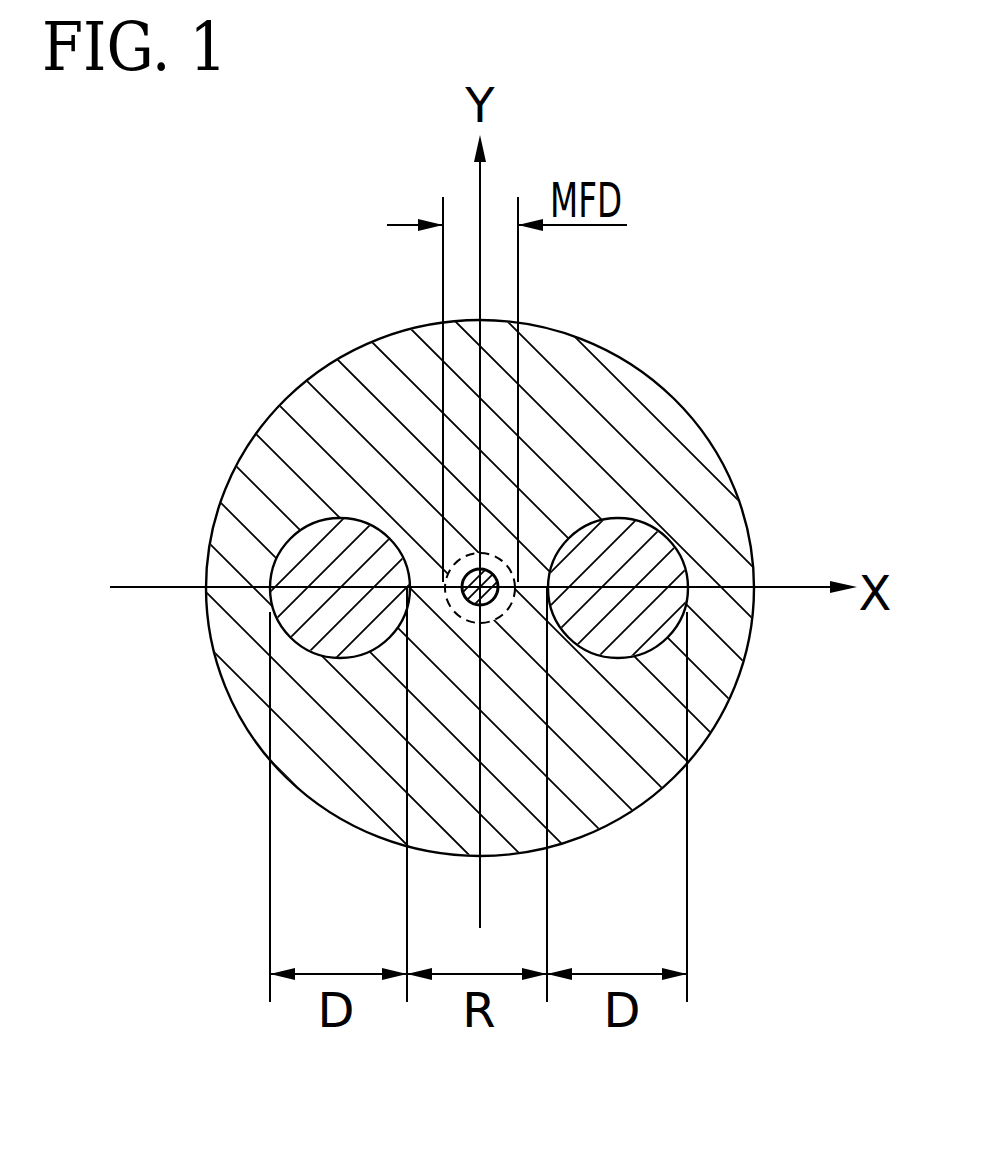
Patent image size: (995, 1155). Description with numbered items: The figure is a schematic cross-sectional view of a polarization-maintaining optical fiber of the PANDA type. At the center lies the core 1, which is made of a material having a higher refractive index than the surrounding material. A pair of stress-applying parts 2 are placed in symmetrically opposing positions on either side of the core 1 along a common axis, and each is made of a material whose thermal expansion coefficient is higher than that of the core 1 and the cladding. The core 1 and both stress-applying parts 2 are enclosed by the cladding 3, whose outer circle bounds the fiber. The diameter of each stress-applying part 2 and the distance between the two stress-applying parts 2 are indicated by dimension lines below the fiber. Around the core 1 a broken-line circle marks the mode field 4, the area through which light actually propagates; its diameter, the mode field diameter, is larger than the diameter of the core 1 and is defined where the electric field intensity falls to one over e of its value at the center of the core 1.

The core 1 is at (498, 555).
The stress-applying part 2 is at (284, 553).
The cladding 3 is at (723, 665).
The mode field 4 is at (461, 618).